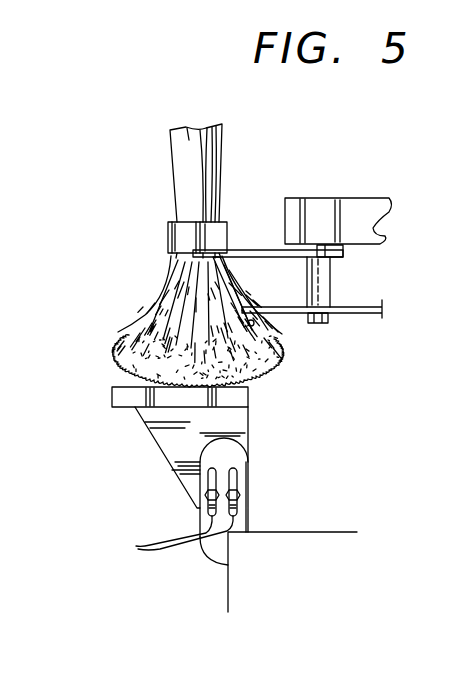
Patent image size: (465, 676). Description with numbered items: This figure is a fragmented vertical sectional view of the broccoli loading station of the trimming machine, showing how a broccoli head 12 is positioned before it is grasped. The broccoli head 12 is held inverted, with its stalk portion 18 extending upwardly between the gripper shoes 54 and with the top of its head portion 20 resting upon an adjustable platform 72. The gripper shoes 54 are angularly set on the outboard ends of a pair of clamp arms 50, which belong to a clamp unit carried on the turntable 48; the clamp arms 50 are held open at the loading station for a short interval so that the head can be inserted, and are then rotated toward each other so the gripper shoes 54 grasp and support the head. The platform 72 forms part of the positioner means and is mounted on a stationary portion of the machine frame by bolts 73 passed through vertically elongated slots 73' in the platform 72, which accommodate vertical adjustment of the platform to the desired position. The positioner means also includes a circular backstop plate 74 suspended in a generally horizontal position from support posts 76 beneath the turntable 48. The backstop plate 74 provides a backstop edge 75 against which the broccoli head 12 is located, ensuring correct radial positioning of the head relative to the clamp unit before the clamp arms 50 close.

The broccoli head 12 is at (163, 291).
The stalk portion 18 is at (190, 160).
The head portion 20 is at (135, 356).
The turntable 48 is at (352, 207).
The clamp arms 50 is at (258, 249).
The gripper shoes 54 is at (185, 238).
The platform 72 is at (112, 388).
The bolts 73 is at (248, 489).
The vertically elongated slots 73' is at (161, 538).
The circular backstop plate 74 is at (350, 313).
The backstop edge 75 is at (235, 310).
The support posts 76 is at (330, 280).